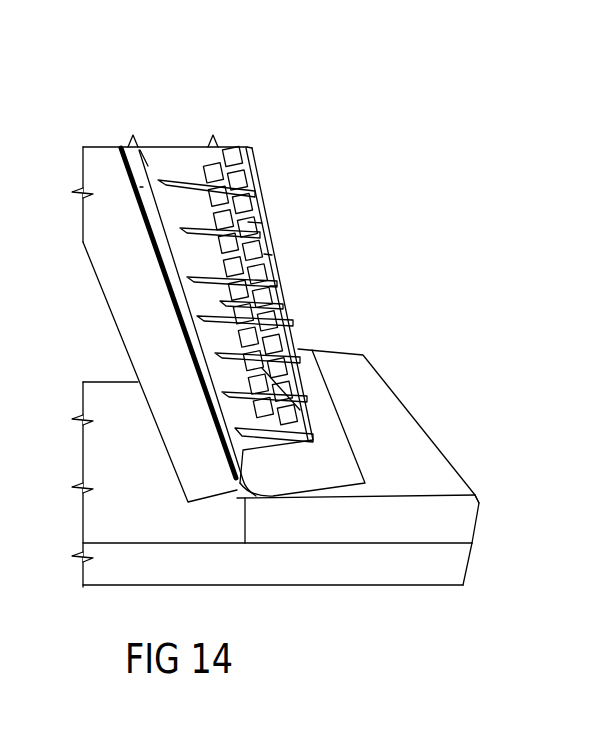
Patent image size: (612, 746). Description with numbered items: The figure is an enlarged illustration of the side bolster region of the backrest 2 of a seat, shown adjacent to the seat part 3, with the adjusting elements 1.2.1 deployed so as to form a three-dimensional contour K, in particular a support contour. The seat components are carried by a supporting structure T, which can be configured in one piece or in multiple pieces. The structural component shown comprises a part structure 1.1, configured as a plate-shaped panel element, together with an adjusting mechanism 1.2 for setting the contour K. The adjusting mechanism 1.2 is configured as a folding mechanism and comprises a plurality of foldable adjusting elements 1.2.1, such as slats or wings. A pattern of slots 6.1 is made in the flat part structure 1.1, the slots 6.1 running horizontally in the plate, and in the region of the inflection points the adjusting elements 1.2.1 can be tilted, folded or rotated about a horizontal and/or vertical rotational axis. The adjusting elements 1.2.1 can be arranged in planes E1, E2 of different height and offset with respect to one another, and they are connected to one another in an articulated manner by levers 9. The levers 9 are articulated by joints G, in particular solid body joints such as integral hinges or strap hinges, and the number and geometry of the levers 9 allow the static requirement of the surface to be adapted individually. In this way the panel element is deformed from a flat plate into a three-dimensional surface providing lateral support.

The part structure 1.1 is at (226, 120).
The adjusting mechanism 1.2 is at (176, 120).
The adjusting elements 1.2.1 is at (295, 328).
The backrest 2 is at (118, 285).
The seat part 3 is at (445, 477).
The slots 6.1 is at (262, 223).
The lever 9 is at (250, 187).
The plane E1 is at (277, 286).
The plane E2 is at (272, 255).
The joints G is at (146, 164).
The contour K is at (320, 126).
The supporting structure T is at (140, 187).